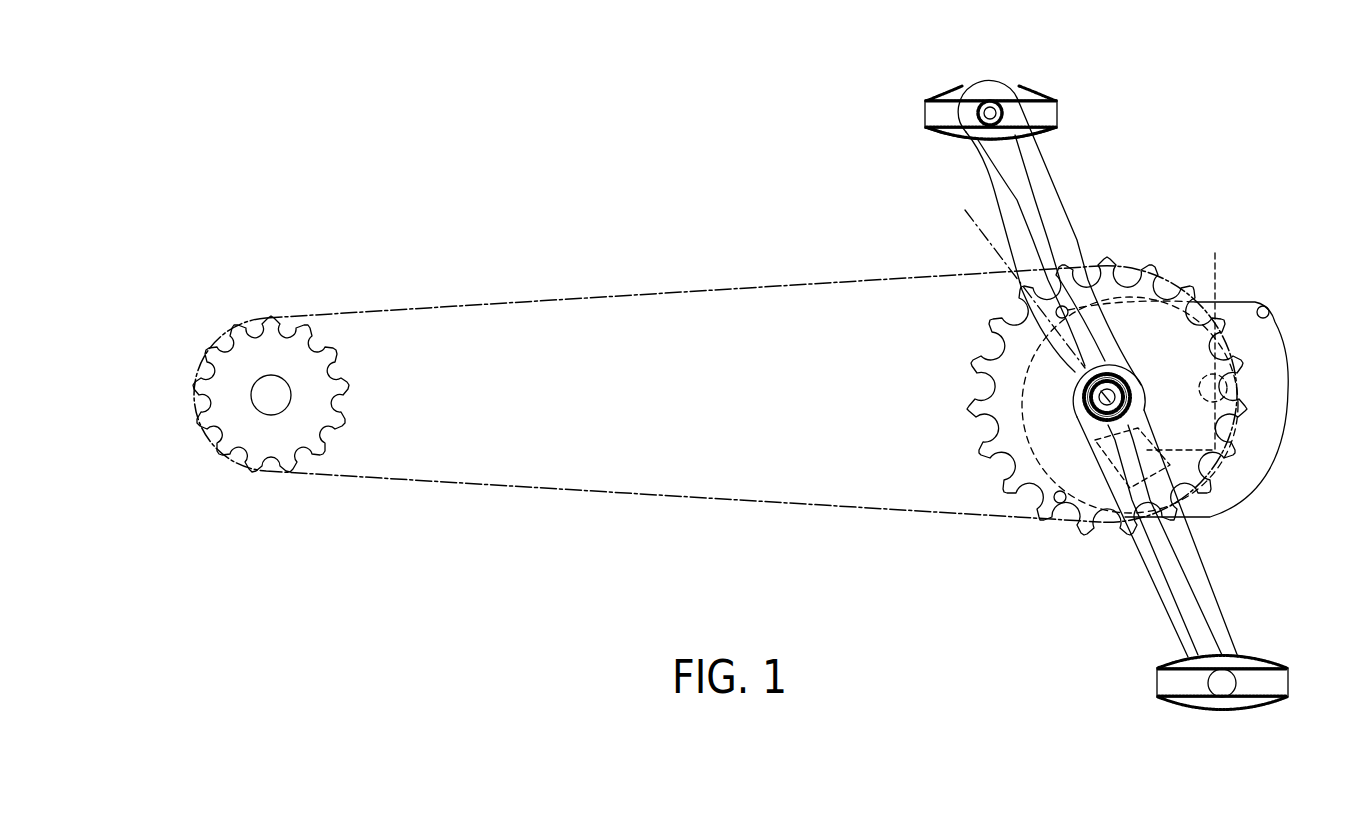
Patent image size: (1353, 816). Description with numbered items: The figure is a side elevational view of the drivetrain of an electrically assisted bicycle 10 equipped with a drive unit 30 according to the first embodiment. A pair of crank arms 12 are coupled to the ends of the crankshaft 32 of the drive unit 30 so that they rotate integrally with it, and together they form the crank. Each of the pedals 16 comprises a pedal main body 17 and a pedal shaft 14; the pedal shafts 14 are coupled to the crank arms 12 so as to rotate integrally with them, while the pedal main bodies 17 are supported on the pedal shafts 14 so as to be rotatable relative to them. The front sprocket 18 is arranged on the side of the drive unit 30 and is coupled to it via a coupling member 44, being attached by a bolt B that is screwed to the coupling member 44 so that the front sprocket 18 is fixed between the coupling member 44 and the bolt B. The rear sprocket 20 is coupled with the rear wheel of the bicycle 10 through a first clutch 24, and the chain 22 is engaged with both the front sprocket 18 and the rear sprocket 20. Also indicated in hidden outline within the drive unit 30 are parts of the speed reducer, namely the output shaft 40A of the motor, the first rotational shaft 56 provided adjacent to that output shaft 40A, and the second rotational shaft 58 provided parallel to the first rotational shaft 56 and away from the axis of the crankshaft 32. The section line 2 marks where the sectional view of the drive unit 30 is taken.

The electrically assisted bicycle 10 is at (1241, 158).
The crank arms 12 is at (1060, 193).
The pedal shaft 14 is at (990, 101).
The pedals 16 is at (1058, 115).
The pedal main body 17 is at (928, 113).
The front sprocket 18 is at (1058, 510).
The rear sprocket 20 is at (300, 460).
The chain 22 is at (688, 500).
The first clutch 24 is at (305, 377).
The drive unit 30 is at (1290, 400).
The crankshaft 32 is at (1107, 372).
The output shaft 40A is at (1200, 378).
The coupling member 44 is at (1282, 355).
The first rotational shaft 56 is at (1200, 445).
The second rotational shaft 58 is at (1103, 468).
The bolt B is at (1080, 425).
The section line 2- 2 is at (959, 217).